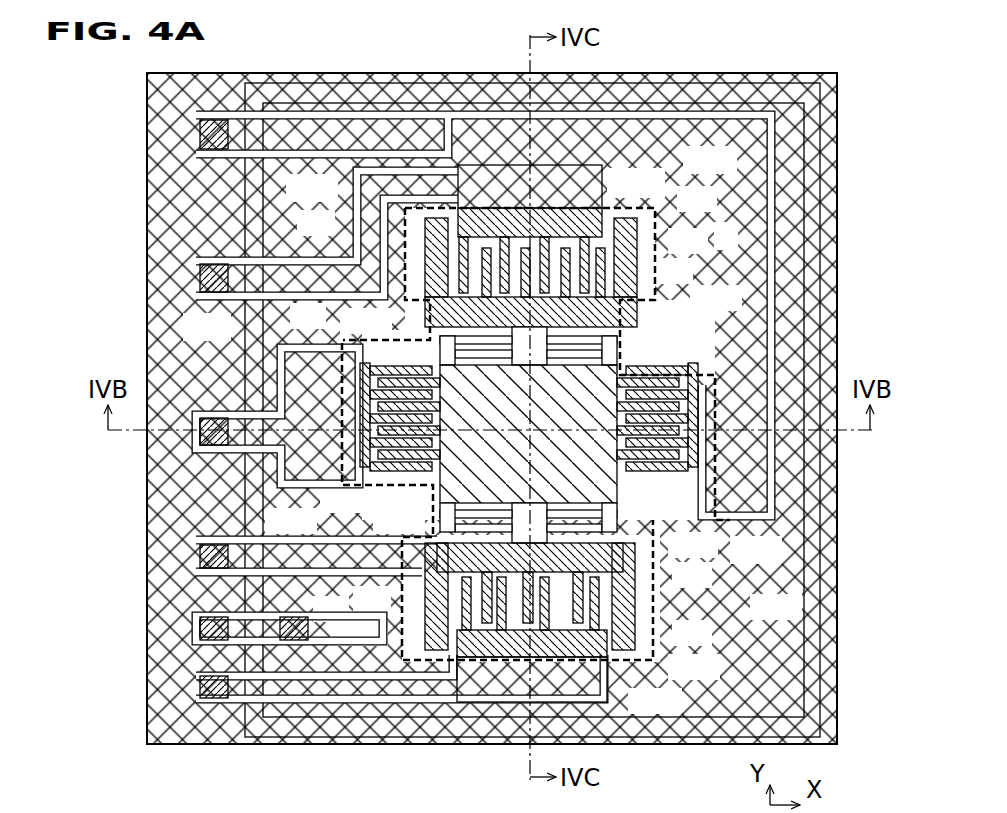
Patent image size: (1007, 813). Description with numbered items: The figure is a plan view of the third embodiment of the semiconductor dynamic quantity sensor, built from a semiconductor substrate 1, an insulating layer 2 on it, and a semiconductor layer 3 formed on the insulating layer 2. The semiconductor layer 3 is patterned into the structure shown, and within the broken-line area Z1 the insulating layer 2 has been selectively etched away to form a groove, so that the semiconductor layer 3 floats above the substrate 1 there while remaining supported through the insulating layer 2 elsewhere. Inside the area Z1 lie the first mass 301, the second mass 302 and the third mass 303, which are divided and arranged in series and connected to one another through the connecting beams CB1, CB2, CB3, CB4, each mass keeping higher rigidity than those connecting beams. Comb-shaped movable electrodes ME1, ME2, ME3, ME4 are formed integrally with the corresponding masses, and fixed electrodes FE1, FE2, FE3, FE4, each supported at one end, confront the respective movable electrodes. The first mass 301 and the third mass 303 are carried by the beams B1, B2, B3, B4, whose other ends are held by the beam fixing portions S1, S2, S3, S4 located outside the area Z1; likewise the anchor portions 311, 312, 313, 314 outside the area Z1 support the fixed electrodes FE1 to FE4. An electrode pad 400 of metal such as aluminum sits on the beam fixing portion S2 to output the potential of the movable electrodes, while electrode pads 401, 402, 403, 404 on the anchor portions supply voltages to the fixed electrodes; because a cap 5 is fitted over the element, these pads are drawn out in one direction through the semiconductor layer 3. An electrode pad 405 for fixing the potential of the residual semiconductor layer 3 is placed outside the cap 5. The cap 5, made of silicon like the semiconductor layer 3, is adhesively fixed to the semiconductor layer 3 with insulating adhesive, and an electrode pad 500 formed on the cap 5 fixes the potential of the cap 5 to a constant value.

The semiconductor substrate 1 is at (147, 736).
The insulating layer 2 is at (735, 248).
The semiconductor layer 3 is at (505, 188).
The cap 5 is at (738, 83).
The first mass 301 is at (602, 560).
The second mass 302 is at (640, 362).
The third mass 303 is at (617, 340).
The anchor portion 311 is at (610, 688).
The anchor portion 312 is at (603, 168).
The anchor portion 313 is at (306, 485).
The anchor portion 314 is at (730, 590).
The electrode pad 400 is at (193, 556).
The electrode pad 401 is at (218, 744).
The electrode pad 402 is at (193, 277).
The electrode pad 403 is at (170, 437).
The electrode pad 404 is at (193, 134).
The electrode pad 405 is at (193, 630).
The electrode pad 500 is at (280, 628).
The fixed electrode FE1 is at (524, 629).
The fixed electrode FE2 is at (475, 231).
The fixed electrode FE3 is at (309, 413).
The fixed electrode FE4 is at (707, 450).
The movable electrode ME1 is at (457, 648).
The movable electrode ME2 is at (570, 252).
The movable electrode ME3 is at (360, 470).
The movable electrode ME4 is at (692, 385).
The beam B1 is at (425, 600).
The beam B2 is at (637, 628).
The beam B3 is at (400, 222).
The beam B4 is at (637, 240).
The beam fixing portion S1 is at (402, 612).
The beam fixing portion S2 is at (637, 572).
The beam fixing portion S3 is at (322, 345).
The beam fixing portion S4 is at (637, 270).
The connecting beam CB1 is at (438, 521).
The connecting beam CB2 is at (617, 515).
The connecting beam CB3 is at (412, 340).
The connecting beam CB4 is at (640, 345).
The area Z1 is at (642, 236).